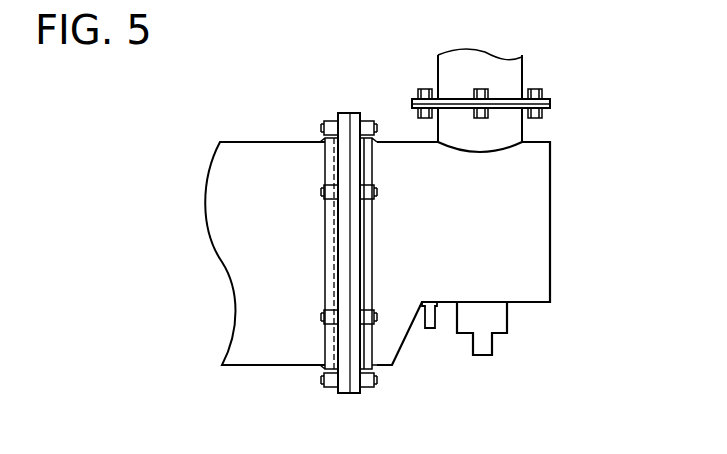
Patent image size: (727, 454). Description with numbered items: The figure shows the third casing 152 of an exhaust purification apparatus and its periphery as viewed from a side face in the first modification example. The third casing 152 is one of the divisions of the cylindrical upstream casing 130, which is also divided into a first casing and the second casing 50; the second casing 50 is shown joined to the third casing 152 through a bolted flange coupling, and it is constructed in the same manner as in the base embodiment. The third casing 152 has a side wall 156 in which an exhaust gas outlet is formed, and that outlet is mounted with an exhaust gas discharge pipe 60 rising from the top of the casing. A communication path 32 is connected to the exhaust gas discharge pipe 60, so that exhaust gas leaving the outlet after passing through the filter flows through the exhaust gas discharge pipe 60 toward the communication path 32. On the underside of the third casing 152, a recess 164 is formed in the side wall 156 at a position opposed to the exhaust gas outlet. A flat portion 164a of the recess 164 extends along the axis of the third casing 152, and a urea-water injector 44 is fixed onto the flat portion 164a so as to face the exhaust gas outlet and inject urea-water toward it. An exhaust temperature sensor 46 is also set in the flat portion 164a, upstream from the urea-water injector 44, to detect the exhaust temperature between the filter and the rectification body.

The upstream casing 130 is at (327, 78).
The second casing 50 is at (272, 140).
The side wall 156 is at (395, 147).
The communication path 32 is at (512, 73).
The exhaust gas discharge pipe 60 is at (513, 128).
The third casing 152 is at (528, 208).
The flat portion 164a is at (536, 303).
The recess 164 is at (521, 322).
The exhaust temperature sensor 46 is at (430, 320).
The urea-water injector 44 is at (495, 323).